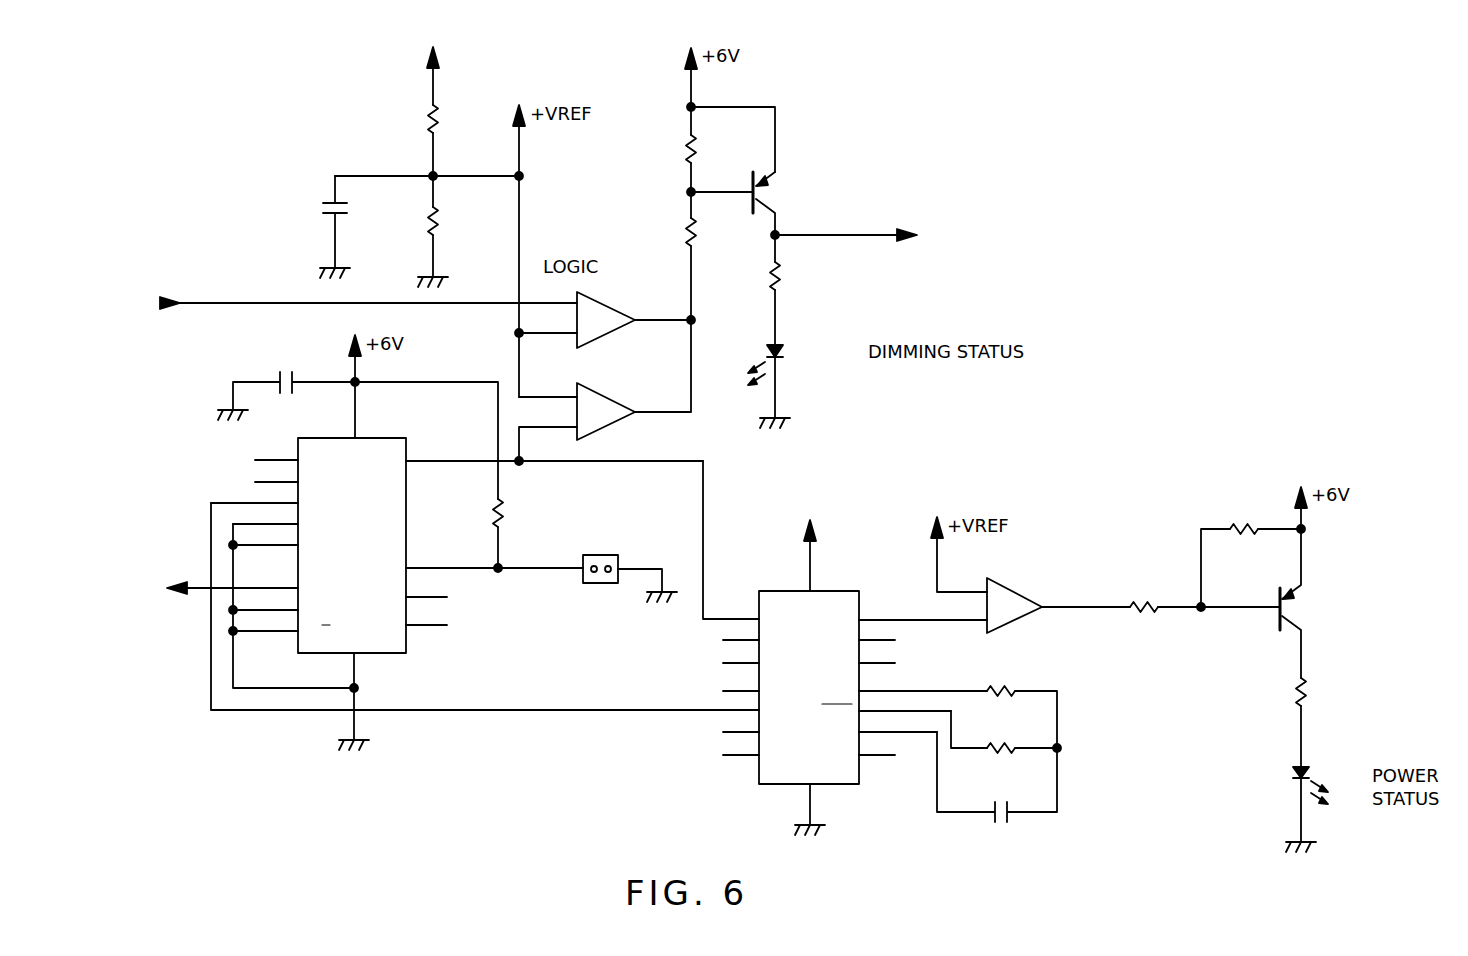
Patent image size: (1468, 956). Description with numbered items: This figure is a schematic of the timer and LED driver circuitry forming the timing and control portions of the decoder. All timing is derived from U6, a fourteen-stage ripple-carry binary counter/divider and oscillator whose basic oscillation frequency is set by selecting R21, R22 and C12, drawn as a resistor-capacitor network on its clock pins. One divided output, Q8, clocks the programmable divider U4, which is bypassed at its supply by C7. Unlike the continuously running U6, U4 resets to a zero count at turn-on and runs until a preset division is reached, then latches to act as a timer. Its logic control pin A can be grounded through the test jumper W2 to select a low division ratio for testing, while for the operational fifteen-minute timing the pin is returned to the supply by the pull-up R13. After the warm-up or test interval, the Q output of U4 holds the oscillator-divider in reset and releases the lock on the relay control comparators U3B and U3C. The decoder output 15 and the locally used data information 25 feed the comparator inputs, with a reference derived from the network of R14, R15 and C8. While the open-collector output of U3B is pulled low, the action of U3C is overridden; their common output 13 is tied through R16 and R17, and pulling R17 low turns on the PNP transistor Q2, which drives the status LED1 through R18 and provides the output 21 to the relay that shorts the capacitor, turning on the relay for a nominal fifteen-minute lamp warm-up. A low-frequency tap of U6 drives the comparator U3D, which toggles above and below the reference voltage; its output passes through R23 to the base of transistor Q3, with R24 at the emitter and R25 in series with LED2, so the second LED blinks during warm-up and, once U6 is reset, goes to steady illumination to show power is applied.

The decoder output 15 is at (368, 291).
The data output information 25 is at (368, 291).
The logic output signal 13 is at (727, 323).
The output to relay 21 is at (902, 225).
The resistor R14 is at (455, 110).
The resistor R15 is at (449, 231).
The capacitor C8 is at (351, 227).
The comparator U3C is at (605, 316).
The comparator U3B is at (605, 390).
The resistor R16 is at (669, 149).
The resistor R17 is at (669, 232).
The resistor R18 is at (795, 290).
The PNP transistor Q2 is at (755, 203).
The status LED LED1 is at (792, 384).
The capacitor C7 is at (286, 382).
The pull-up resistor R13 is at (519, 533).
The programmable divider IC U4 is at (456, 583).
The test jumper W2 is at (621, 575).
The 14-stage ripple-carry binary counter/divider and oscillator U6 is at (838, 676).
The resistor R21 is at (1022, 707).
The resistor R22 is at (1004, 732).
The capacitor C12 is at (997, 777).
The comparator U3D is at (1042, 605).
The resistor R23 is at (1164, 595).
The resistor R24 is at (1251, 554).
The transistor Q3 is at (1269, 603).
The resistor R25 is at (1321, 722).
The second LED LED2 is at (1279, 807).